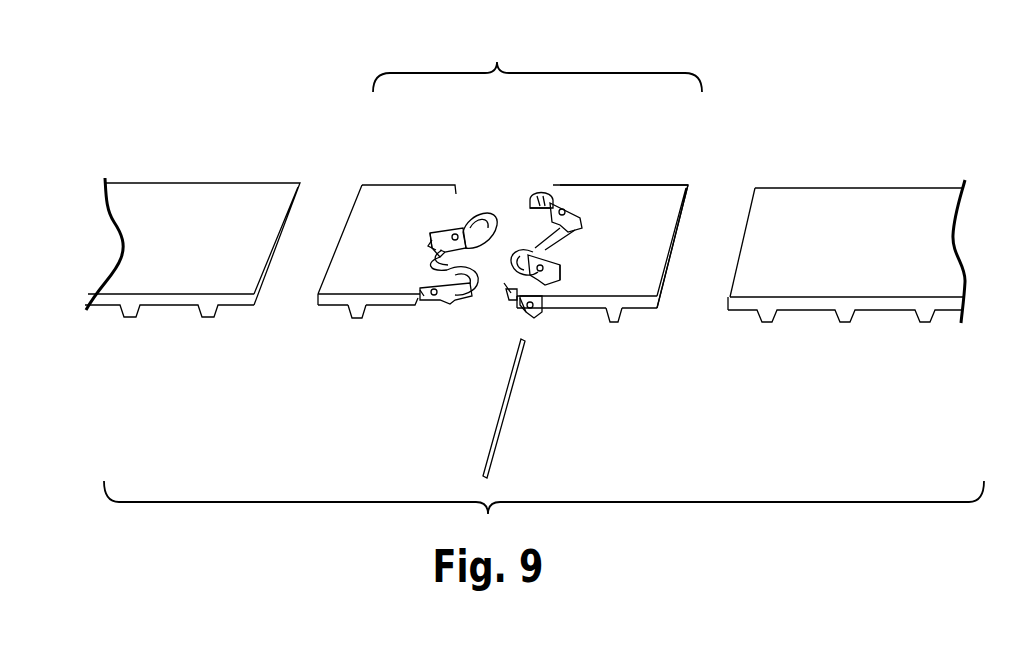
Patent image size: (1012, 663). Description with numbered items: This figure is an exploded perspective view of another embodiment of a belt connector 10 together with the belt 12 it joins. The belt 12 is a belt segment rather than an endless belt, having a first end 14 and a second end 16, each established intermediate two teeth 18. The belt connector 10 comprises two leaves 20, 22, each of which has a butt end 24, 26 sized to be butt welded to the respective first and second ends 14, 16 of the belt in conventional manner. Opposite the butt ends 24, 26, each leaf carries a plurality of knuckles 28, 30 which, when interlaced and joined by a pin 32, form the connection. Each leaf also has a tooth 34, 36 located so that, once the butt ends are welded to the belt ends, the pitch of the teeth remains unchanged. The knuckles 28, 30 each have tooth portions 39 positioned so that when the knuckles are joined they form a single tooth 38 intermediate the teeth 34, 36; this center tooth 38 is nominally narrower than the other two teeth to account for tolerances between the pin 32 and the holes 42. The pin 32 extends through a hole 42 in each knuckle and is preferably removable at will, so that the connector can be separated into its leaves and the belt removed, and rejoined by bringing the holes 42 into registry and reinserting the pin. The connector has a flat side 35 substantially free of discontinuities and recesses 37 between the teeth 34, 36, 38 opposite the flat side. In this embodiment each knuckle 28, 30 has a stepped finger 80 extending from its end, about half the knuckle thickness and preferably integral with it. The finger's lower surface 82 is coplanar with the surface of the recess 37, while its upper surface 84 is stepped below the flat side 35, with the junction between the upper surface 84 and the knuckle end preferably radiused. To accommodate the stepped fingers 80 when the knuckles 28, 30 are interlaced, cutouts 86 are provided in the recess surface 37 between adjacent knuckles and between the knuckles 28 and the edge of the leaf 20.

The belt connector 10 is at (497, 62).
The belt 12 is at (853, 236).
The first end 14 is at (302, 183).
The second end 16 is at (742, 217).
The teeth 18 is at (131, 306).
The leaf 20 is at (360, 260).
The leaf 22 is at (591, 261).
The butt end 24 is at (318, 298).
The butt end 26 is at (665, 273).
The knuckles 28 is at (470, 212).
The knuckles 30 is at (547, 212).
The pin 32 is at (498, 437).
The tooth 34 is at (357, 313).
The flat side 35 is at (649, 213).
The tooth 36 is at (613, 322).
The recesses 37 is at (380, 304).
The single tooth 38 is at (505, 301).
The tooth portions 39 is at (462, 232).
The hole 42 is at (428, 287).
The stepped finger 80 is at (518, 242).
The lower surface 82 is at (476, 296).
The upper surface 84 is at (483, 210).
The cutouts 86 is at (433, 240).